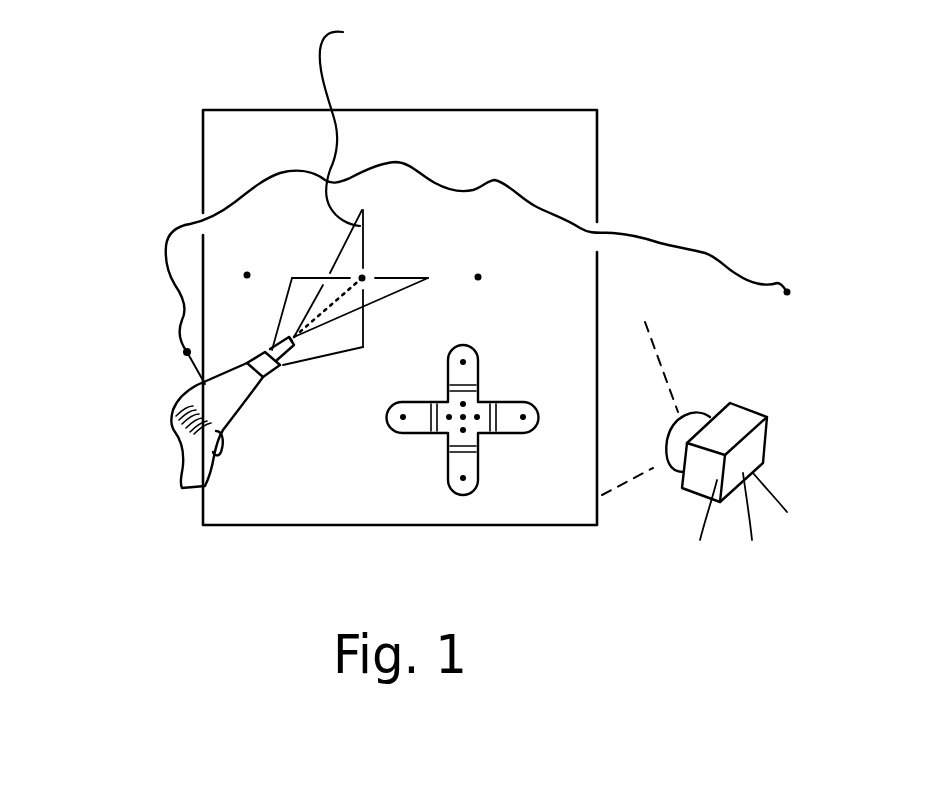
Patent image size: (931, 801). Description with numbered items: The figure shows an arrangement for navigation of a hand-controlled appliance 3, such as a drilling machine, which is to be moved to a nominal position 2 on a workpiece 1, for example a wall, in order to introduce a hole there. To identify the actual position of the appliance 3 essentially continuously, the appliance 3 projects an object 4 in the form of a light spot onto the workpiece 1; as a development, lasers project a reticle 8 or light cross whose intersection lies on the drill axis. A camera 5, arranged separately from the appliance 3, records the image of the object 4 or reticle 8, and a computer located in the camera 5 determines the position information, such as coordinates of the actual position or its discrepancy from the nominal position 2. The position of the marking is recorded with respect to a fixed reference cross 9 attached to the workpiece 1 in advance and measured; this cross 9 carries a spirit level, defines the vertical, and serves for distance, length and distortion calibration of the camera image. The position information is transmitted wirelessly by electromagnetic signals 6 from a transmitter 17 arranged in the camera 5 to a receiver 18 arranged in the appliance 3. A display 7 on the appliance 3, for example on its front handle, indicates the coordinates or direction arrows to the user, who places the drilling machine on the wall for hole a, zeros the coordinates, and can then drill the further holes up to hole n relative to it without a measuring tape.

The workpiece 1 is at (556, 142).
The nominal position 2 is at (247, 275).
The appliance 3 is at (188, 462).
The object 4 is at (362, 278).
The camera 5 is at (700, 482).
The electromagnetic signals 6 is at (640, 237).
The display 7 is at (178, 406).
The reticle 8 is at (342, 120).
The reference cross 9 is at (468, 463).
The transmitter 17 is at (728, 430).
The receiver 18 is at (187, 352).